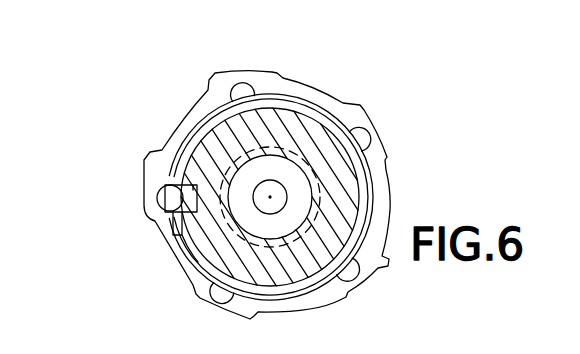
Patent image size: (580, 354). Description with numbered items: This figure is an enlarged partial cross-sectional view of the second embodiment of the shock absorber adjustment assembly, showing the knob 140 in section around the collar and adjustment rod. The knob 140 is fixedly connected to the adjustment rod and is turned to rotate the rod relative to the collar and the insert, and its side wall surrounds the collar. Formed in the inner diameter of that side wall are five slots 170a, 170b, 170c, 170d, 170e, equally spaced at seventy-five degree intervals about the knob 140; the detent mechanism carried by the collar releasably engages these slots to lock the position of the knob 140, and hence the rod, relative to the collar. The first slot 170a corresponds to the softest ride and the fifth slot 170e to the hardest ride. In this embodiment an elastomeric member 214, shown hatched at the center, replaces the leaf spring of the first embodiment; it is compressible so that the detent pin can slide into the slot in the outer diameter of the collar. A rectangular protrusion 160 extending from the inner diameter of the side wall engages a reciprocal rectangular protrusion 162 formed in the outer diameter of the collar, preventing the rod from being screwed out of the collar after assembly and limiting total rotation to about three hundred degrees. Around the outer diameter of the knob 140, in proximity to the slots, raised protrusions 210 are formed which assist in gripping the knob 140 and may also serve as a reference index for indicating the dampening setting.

The knob 140 is at (360, 113).
The raised protrusions 210 is at (343, 294).
The elastomeric member 214 is at (203, 140).
The first slot 170a is at (160, 193).
The second slot 170b is at (252, 90).
The third slot 170c is at (365, 138).
The fourth slot 170d is at (353, 270).
The fifth slot 170e is at (201, 288).
The rectangular protrusion 162 is at (176, 214).
The rectangular protrusion 160 is at (183, 246).